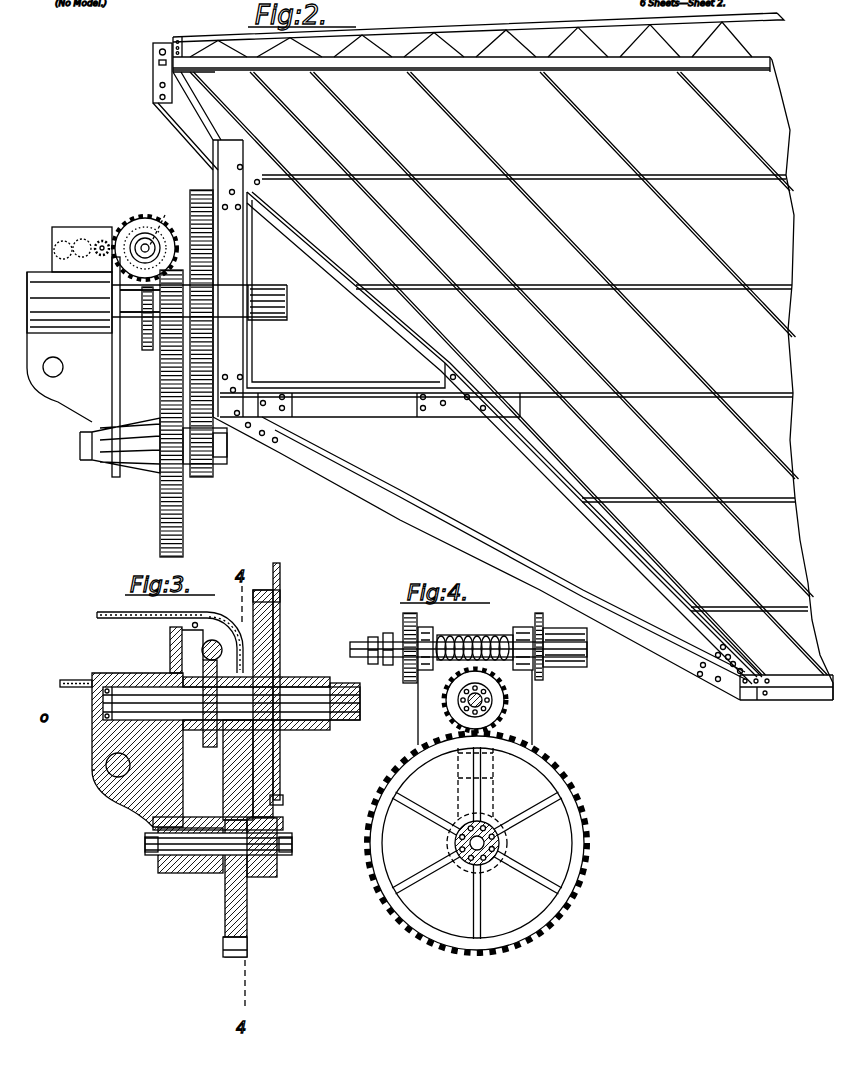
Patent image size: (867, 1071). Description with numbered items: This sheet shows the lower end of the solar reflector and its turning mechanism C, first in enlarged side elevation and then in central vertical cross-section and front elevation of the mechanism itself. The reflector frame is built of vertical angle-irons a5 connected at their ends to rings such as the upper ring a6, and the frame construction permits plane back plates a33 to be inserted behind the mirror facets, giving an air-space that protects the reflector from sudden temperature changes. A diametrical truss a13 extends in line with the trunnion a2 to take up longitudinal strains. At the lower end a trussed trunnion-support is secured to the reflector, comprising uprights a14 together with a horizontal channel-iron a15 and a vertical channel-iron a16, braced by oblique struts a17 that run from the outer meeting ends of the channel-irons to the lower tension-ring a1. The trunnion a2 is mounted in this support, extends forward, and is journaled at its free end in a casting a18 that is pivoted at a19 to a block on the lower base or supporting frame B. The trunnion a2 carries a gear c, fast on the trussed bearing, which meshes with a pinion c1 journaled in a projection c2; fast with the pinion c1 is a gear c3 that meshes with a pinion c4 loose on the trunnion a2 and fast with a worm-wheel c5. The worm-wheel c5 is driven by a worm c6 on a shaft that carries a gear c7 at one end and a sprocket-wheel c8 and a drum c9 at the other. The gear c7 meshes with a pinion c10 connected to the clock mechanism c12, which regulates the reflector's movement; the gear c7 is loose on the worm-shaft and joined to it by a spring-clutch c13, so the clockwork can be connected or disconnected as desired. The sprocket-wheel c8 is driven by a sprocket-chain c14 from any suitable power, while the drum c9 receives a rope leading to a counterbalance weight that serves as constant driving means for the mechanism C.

In FIG. 2, the lower tension supporting-frame a1 is at (812, 700).
In FIG. 2, the trunnion a2 is at (270, 300).
In FIG. 3, the trunnion a2 is at (346, 718).
In FIG. 4, the trunnion a2 is at (447, 716).
In FIG. 2, the vertical angle-iron a5 is at (680, 238).
In FIG. 2, the upper ring a6 is at (748, 60).
In FIG. 2, the diametrical truss a13 is at (662, 40).
In FIG. 2, the uprights a14 is at (520, 452).
In FIG. 2, the horizontal channel-iron a15 is at (350, 378).
In FIG. 2, the vertical channel-iron a16 is at (240, 343).
In FIG. 2, the oblique struts a17 is at (480, 508).
In FIG. 2, the casting a18 is at (60, 347).
In FIG. 3, the casting a18 is at (116, 790).
In FIG. 4, the casting a18 is at (525, 745).
In FIG. 2, the pivot a19 is at (52, 378).
In FIG. 3, the pivot a19 is at (100, 770).
In FIG. 2, the plane back plates a33 is at (509, 373).
In FIG. 3, the lower base or supporting frame B is at (167, 751).
In FIG. 2, the turning mechanism C is at (68, 245).
In FIG. 2, the gear c is at (207, 257).
In FIG. 3, the gear c is at (276, 630).
In FIG. 2, the pinion c1 is at (216, 462).
In FIG. 3, the pinion c1 is at (268, 870).
In FIG. 2, the projection c2 is at (140, 470).
In FIG. 3, the projection c2 is at (200, 868).
In FIG. 2, the gear c3 is at (184, 502).
In FIG. 3, the gear c3 is at (240, 787).
In FIG. 4, the gear c3 is at (560, 766).
In FIG. 2, the pinion c4 is at (170, 287).
In FIG. 3, the pinion c4 is at (240, 678).
In FIG. 4, the pinion c4 is at (452, 712).
In FIG. 2, the worm-wheel c5 is at (146, 350).
In FIG. 4, the worm-wheel c5 is at (443, 700).
In FIG. 2, the worm c6 is at (163, 215).
In FIG. 3, the worm c6 is at (200, 648).
In FIG. 4, the worm c6 is at (470, 635).
In FIG. 2, the gear c7 is at (145, 216).
In FIG. 4, the gear c7 is at (403, 625).
In FIG. 3, the sprocket-wheel c8 is at (212, 640).
In FIG. 4, the sprocket-wheel c8 is at (540, 683).
In FIG. 4, the drum c9 is at (587, 656).
In FIG. 2, the pinion c10 is at (100, 240).
In FIG. 2, the clock mechanism c12 is at (72, 235).
In FIG. 4, the spring-clutch c13 is at (380, 665).
In FIG. 3, the sprocket-chain c14 is at (97, 616).